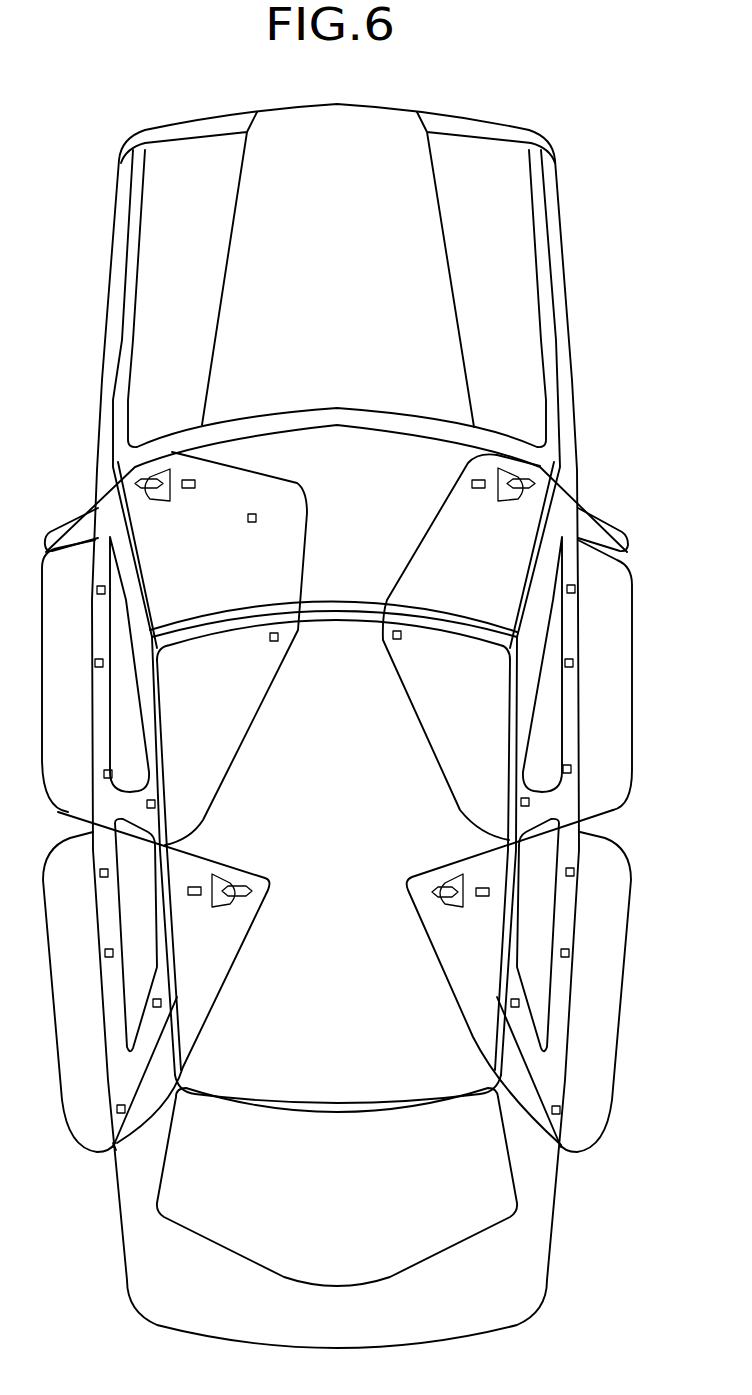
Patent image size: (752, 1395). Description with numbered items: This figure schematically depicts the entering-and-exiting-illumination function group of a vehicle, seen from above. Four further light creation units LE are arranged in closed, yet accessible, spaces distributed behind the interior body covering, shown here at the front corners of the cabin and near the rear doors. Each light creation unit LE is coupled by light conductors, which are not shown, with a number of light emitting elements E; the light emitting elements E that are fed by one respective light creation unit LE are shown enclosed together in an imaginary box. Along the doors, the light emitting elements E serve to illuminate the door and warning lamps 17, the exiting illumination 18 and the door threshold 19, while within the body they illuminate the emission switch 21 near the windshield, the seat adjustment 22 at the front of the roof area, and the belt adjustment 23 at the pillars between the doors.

The door and warning lamps 17 is at (104, 774).
The exiting illumination 18 is at (95, 663).
The door threshold 19 is at (97, 590).
The emission switch 21 is at (257, 518).
The seat adjustment 22 is at (270, 640).
The belt adjustment 23 is at (155, 804).
The light creation unit LE is at (135, 472).
The light emitting element E is at (113, 1158).